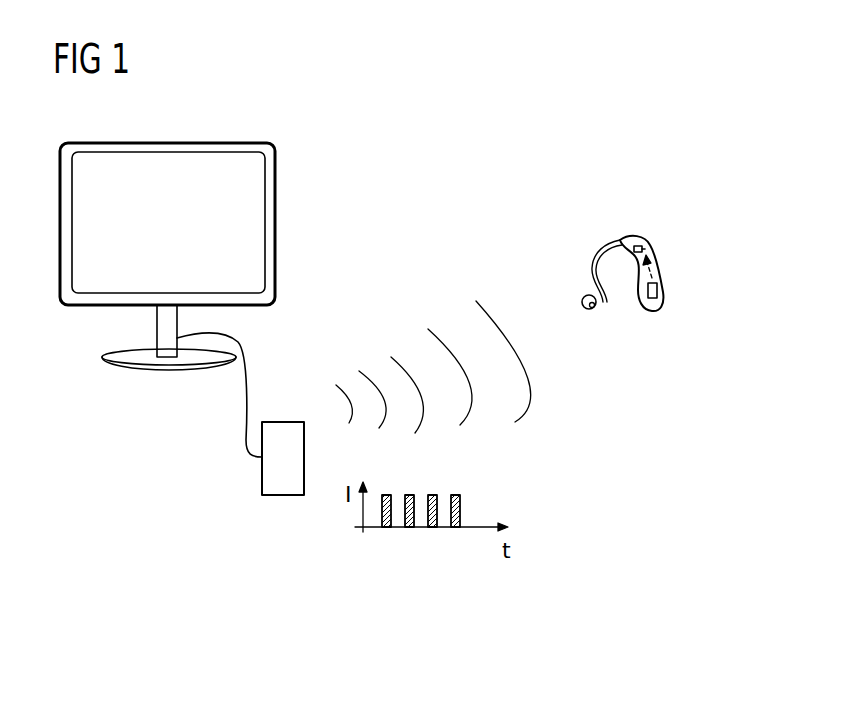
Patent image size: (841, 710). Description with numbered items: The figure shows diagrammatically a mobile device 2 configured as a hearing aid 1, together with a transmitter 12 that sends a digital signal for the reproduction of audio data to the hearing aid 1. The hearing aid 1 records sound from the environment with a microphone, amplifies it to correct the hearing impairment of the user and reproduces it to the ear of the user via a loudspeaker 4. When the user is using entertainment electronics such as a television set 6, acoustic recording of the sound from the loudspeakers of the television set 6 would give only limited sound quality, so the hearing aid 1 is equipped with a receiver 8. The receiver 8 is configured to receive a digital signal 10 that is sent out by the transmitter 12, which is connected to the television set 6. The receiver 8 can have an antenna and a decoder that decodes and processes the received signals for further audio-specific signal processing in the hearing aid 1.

The hearing aid 1 is at (636, 222).
The mobile device 2 is at (647, 269).
The loudspeaker 4 is at (647, 252).
The television set 6 is at (173, 143).
The receiver 8 is at (660, 292).
The digital signal 10 is at (517, 413).
The transmitter 12 is at (280, 495).